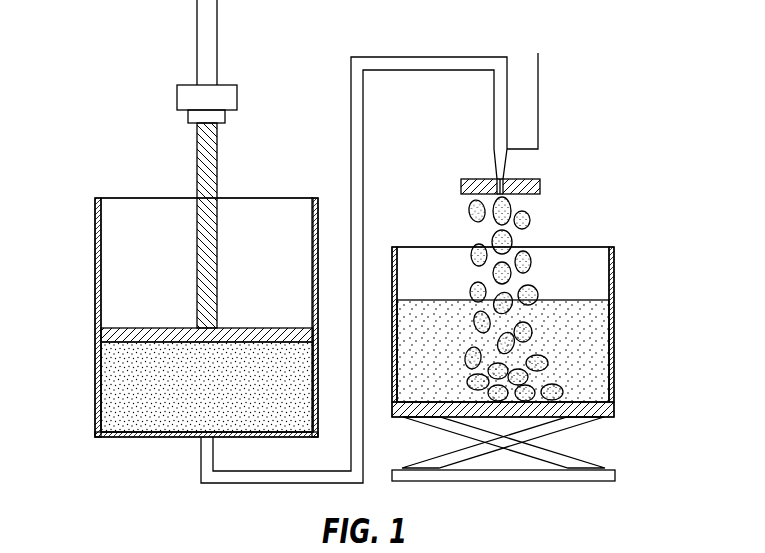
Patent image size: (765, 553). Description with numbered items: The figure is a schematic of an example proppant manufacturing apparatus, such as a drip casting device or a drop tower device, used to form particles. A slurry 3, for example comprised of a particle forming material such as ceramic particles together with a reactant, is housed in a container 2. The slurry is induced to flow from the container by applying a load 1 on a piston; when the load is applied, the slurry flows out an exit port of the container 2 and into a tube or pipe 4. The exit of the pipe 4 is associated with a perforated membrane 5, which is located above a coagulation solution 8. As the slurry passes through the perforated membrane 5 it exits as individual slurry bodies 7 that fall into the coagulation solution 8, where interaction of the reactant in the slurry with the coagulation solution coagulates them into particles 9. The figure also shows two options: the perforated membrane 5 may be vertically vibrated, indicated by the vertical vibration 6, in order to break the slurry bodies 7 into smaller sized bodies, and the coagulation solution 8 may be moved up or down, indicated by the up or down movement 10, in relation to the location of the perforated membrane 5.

The load 1 is at (248, 66).
The container 2 is at (156, 192).
The slurry 3 is at (126, 390).
The tube or pipe 4 is at (305, 470).
The perforated membrane 5 is at (478, 178).
The vertical vibration of perforated membrane 6 is at (563, 141).
The slurry bodies 7 is at (526, 233).
The coagulation solution 8 is at (445, 300).
The particles 9 is at (526, 313).
The up or down movement of coagulation solution 10 is at (613, 459).